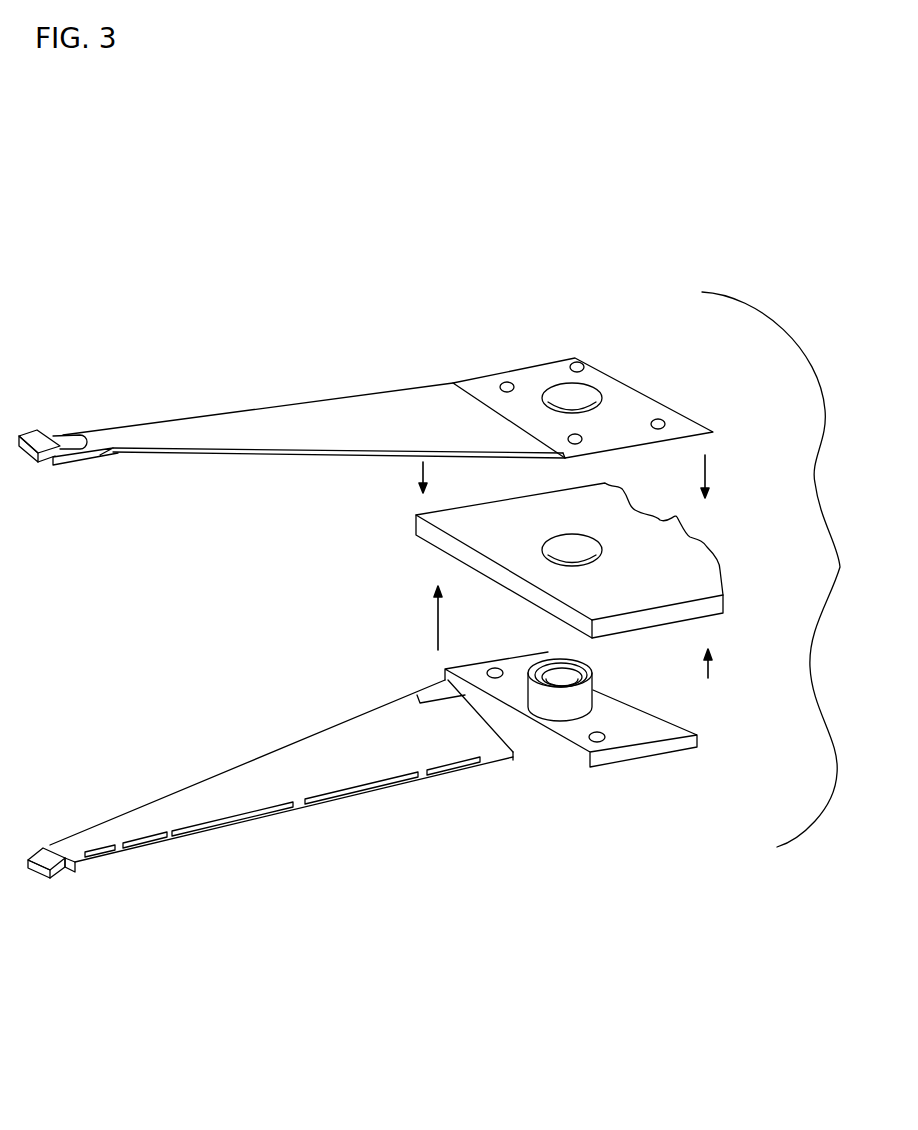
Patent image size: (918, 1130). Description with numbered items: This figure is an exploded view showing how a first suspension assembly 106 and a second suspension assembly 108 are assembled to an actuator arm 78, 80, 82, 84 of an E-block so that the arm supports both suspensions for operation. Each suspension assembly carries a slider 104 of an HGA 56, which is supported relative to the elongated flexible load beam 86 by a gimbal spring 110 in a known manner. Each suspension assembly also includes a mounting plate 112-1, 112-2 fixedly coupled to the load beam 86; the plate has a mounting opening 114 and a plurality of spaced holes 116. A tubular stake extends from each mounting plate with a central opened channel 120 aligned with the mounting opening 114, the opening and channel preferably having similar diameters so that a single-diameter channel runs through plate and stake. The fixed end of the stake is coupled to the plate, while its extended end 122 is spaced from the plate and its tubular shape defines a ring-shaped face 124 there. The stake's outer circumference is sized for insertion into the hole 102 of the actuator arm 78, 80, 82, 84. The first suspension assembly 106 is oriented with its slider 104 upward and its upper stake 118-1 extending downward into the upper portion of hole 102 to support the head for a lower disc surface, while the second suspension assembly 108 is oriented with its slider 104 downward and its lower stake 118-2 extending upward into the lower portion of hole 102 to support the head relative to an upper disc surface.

The HGA 56 is at (58, 638).
The slider 104 is at (40, 428).
The gimbal spring 110 is at (78, 442).
The load beam 86 is at (243, 410).
The first suspension assembly 106 is at (391, 328).
The second suspension assembly 108 is at (408, 732).
The mounting plate 112-1 is at (591, 346).
The mounting plate 112-2 is at (660, 730).
The mounting opening 114 is at (592, 387).
The spaced holes 116 is at (507, 382).
The upper stake 118-1 is at (635, 369).
The lower stake 118-2 is at (579, 714).
The channel 120 is at (572, 407).
The extended end 122 is at (549, 652).
The ring-shaped face 124 is at (538, 690).
The hole 102 is at (587, 546).
The actuator arm 78 is at (616, 560).
The actuator arm 80 is at (616, 560).
The actuator arm 82 is at (616, 560).
The actuator arm 84 is at (616, 560).